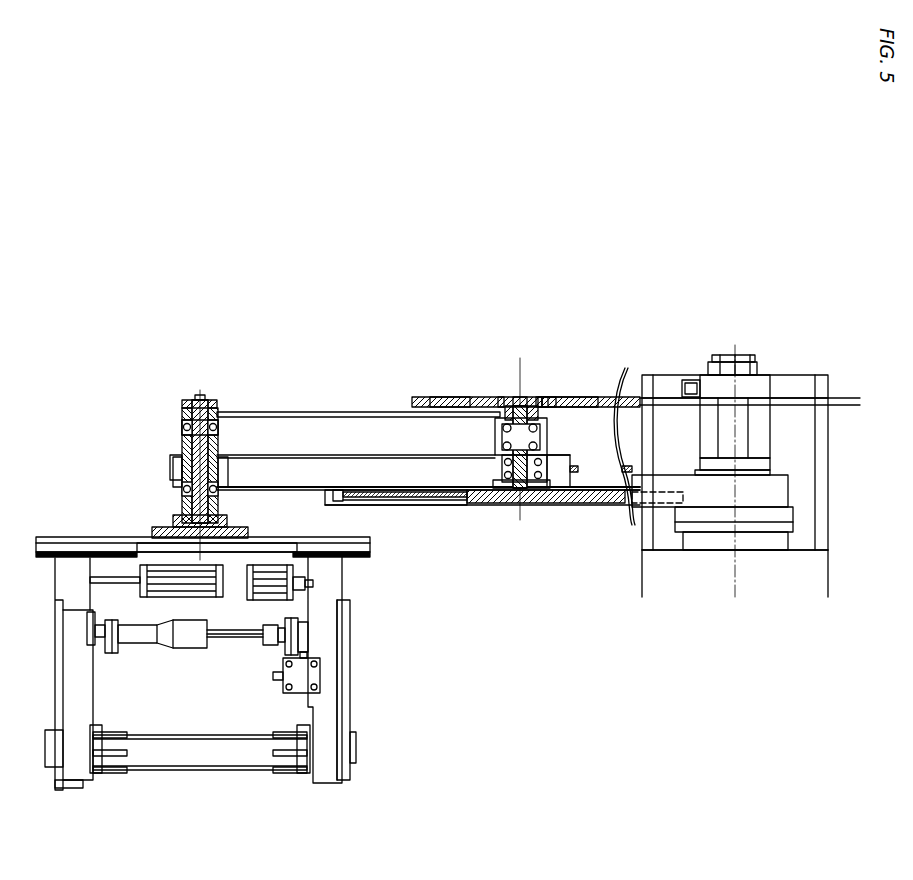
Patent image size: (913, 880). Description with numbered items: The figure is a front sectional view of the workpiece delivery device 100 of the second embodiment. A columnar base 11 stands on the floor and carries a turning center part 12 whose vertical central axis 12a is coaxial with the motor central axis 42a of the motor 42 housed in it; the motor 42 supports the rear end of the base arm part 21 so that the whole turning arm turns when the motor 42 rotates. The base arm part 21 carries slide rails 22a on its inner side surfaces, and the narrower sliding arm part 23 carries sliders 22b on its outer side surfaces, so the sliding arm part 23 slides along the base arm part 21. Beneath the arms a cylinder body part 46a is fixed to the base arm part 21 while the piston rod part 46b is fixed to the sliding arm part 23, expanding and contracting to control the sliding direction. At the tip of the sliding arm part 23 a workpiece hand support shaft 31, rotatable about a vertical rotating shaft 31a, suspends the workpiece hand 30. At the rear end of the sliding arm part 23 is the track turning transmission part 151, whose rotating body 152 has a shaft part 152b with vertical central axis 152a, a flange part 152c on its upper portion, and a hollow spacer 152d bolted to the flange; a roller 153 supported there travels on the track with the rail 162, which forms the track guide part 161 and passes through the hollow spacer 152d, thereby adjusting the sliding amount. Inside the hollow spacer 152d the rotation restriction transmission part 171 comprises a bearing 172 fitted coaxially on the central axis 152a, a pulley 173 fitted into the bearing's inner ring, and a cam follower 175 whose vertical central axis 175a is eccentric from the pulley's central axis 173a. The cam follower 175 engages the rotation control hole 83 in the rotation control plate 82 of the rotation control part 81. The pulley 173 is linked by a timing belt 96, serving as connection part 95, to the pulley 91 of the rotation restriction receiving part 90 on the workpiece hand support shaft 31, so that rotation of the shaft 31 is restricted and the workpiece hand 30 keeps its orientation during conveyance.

The base 11 is at (815, 562).
The turning center part 12 is at (812, 497).
The central axis of the turning center part 12a is at (735, 573).
The base arm part 21 is at (478, 506).
The slide rail 22a is at (416, 506).
The slider 22b is at (450, 506).
The sliding arm part 23 is at (288, 478).
The workpiece hand 30 is at (116, 522).
The workpiece hand support shaft 31 is at (168, 423).
The vertical rotating shaft 31a is at (200, 397).
The motor 42 is at (745, 374).
The motor central axis 42a is at (735, 354).
The cylinder body part 46a is at (598, 506).
The piston rod part 46b is at (398, 506).
The rotation control part 81 is at (495, 324).
The rotation control plate 82 is at (433, 392).
The rotation control hole 83 is at (537, 390).
The rotation restriction receiving part 90 is at (149, 378).
The pulley 91 is at (185, 415).
The connection part 95 is at (340, 345).
The timing belt 96 is at (268, 412).
The workpiece delivery device 100 is at (814, 341).
The track turning transmission part 151 is at (634, 408).
The rotating body 152 is at (475, 404).
The central axis 152a is at (520, 488).
The shaft part 152b is at (550, 478).
The flange part 152c is at (548, 450).
The hollow spacer 152d is at (550, 404).
The roller 153 is at (497, 450).
The track guide part 161 is at (393, 442).
The rail 162 is at (497, 448).
The rotation restriction transmission part 171 is at (547, 312).
The bearing 172 is at (500, 392).
The pulley 173 is at (520, 392).
The central axis of the pulley 173a is at (538, 392).
The cam follower 175 is at (591, 348).
The vertical central axis 175a is at (537, 390).